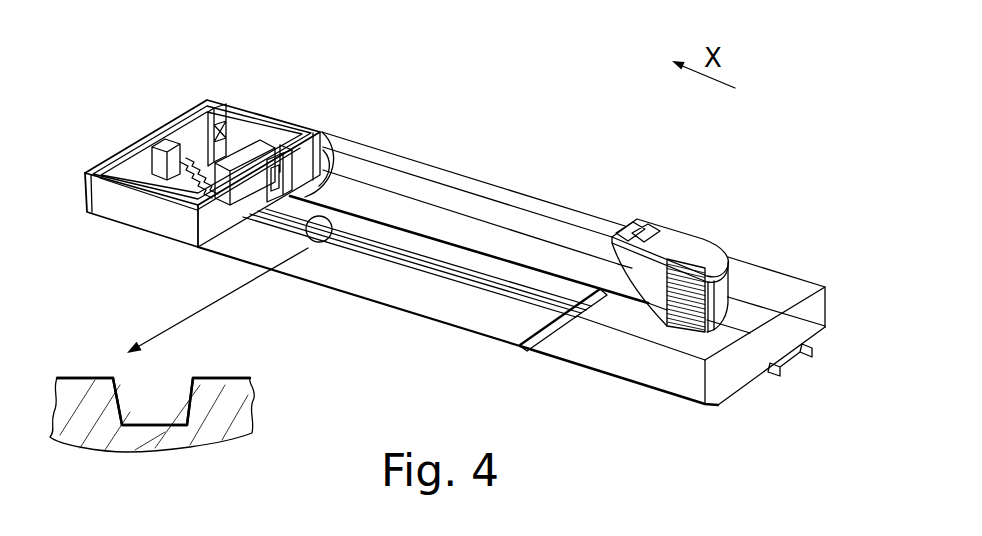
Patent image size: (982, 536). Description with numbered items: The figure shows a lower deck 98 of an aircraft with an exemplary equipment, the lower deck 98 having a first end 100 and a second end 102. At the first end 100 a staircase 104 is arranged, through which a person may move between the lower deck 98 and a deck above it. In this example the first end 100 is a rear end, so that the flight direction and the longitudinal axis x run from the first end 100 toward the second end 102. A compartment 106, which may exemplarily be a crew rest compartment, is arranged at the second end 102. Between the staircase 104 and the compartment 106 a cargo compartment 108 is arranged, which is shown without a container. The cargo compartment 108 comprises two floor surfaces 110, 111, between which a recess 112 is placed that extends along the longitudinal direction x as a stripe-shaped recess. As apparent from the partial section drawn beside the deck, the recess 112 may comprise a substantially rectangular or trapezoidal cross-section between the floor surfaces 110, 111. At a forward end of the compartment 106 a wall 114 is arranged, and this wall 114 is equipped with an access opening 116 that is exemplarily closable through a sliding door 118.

The lower deck 98 is at (625, 170).
The first end 100 is at (808, 235).
The second end 102 is at (241, 93).
The staircase 104 is at (680, 232).
The compartment 106 is at (133, 158).
The cargo compartment 108 is at (445, 155).
The floor surface 110 is at (437, 295).
The floor surface 111 is at (440, 252).
The recess 112 is at (468, 272).
The wall 114 is at (207, 123).
The access opening 116 is at (283, 155).
The sliding door 118 is at (292, 172).